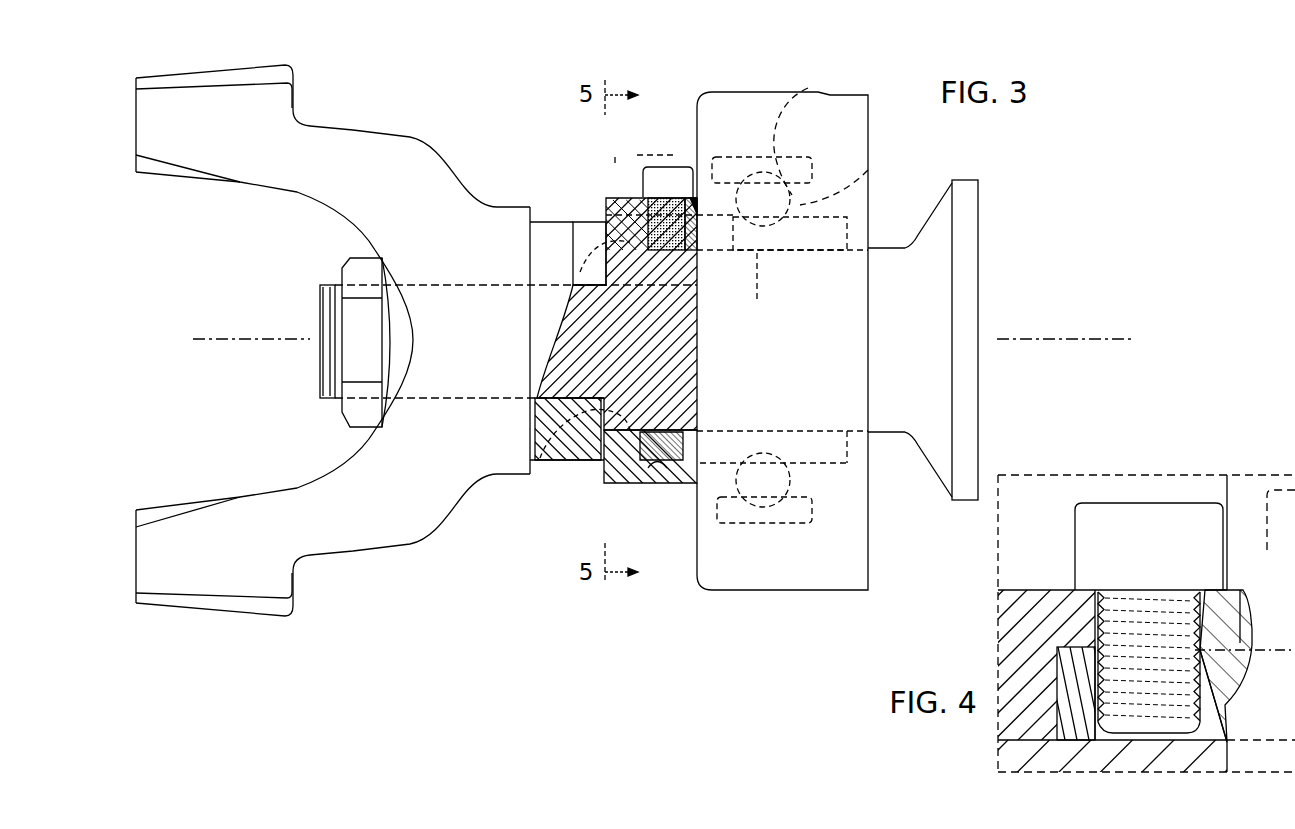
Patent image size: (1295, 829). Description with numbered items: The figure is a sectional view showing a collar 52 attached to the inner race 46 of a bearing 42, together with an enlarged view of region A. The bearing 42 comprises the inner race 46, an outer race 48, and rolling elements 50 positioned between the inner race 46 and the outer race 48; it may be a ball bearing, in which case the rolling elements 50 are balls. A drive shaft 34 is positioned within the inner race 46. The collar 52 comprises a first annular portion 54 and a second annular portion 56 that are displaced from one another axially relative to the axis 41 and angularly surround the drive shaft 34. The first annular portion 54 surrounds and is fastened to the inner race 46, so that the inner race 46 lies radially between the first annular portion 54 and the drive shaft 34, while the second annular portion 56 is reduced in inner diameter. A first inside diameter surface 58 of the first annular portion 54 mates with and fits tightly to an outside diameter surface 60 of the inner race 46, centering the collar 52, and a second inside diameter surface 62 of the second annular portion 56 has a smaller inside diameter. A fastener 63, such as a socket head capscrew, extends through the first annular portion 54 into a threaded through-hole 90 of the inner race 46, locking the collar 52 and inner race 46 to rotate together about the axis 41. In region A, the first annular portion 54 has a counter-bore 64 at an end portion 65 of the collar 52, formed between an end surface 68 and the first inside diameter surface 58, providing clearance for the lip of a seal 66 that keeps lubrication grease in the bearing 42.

In FIG. 3, the drive shaft 34 is at (970, 290).
In FIG. 3, the axis 41 is at (230, 343).
In FIG. 3, the bearing 42 is at (806, 300).
In FIG. 3, the inner race 46 is at (878, 218).
In FIG. 3, the outer race 48 is at (806, 92).
In FIG. 3, the rolling elements 50 is at (858, 184).
In FIG. 3, the collar 52 is at (593, 210).
In FIG. 3, the first annular portion 54 is at (391, 392).
In FIG. 3, the second annular portion 56 is at (612, 467).
In FIG. 3, the first inside diameter surface 58 is at (642, 485).
In FIG. 3, the outside diameter surface 60 is at (874, 490).
In FIG. 3, the second inside diameter surface 62 is at (558, 430).
In FIG. 3, the fastener 63 is at (643, 173).
In FIG. 4, the counter-bore 64 is at (1237, 657).
In FIG. 3, the end portion 65 is at (695, 197).
In FIG. 4, the end portion 65 is at (1222, 592).
In FIG. 4, the seal 66 is at (1220, 643).
In FIG. 3, the end surface 68 is at (700, 203).
In FIG. 4, the end surface 68 is at (1247, 604).
In FIG. 3, the threaded through-hole 90 is at (694, 200).
In FIG. 3, the region A is at (757, 294).